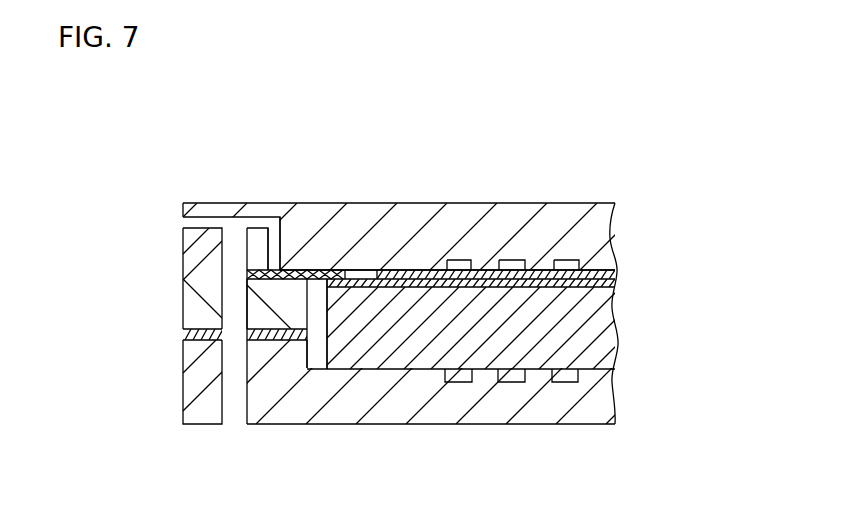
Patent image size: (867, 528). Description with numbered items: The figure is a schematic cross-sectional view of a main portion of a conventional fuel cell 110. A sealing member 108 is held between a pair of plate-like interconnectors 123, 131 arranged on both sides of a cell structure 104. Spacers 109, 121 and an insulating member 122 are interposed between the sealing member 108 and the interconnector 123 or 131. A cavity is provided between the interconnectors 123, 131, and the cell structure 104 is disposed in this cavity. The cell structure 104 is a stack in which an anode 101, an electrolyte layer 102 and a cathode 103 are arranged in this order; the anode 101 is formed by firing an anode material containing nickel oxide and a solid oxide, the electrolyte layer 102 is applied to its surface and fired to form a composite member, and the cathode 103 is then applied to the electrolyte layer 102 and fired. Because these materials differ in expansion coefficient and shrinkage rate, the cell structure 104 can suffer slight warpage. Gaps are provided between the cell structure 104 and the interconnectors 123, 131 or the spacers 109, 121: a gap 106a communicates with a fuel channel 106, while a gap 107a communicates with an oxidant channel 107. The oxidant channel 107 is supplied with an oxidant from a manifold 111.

The fuel cell 110 is at (406, 167).
The interconnector 131 is at (588, 225).
The spacer 109 is at (257, 243).
The gap 107a is at (274, 220).
The sealing member 108 is at (245, 271).
The cathode 103 is at (612, 277).
The oxidant channel 107 is at (460, 263).
The electrolyte layer 102 is at (613, 285).
The anode 101 is at (593, 312).
The cell structure 104 is at (706, 238).
The fuel channel 106 is at (564, 379).
The gap 106a is at (318, 358).
The spacer 121 is at (278, 308).
The insulating member 122 is at (280, 337).
The interconnector 123 is at (273, 381).
The manifold 111 is at (232, 421).